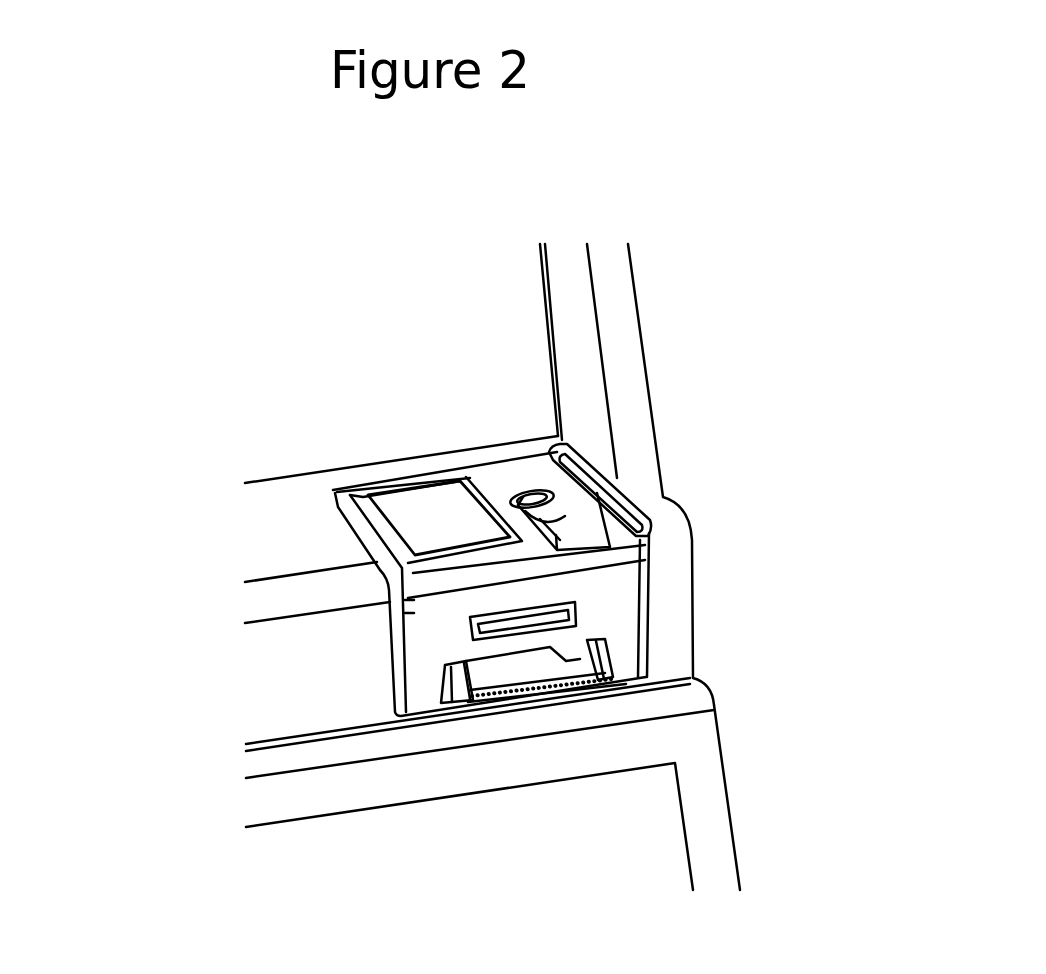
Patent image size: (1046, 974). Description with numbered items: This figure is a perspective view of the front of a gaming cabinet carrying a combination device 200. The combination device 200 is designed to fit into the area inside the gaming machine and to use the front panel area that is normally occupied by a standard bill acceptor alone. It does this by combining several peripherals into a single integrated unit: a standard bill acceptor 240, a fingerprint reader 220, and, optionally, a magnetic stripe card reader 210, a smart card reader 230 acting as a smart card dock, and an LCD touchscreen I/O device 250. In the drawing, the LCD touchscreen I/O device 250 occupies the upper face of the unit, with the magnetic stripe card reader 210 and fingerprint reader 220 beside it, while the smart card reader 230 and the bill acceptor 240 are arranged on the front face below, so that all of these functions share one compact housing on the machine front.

The combination device 200 is at (664, 589).
The magnetic stripe card reader 210 is at (586, 498).
The fingerprint reader 220 is at (557, 539).
The smart card reader 230 is at (545, 617).
The bill acceptor 240 is at (527, 669).
The LCD touchscreen I/O device 250 is at (440, 518).